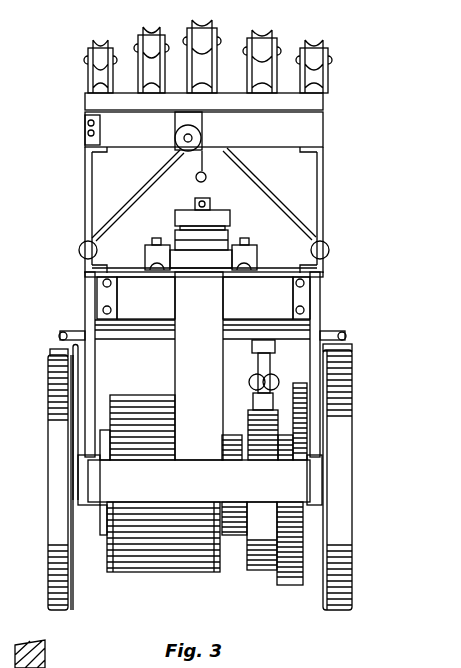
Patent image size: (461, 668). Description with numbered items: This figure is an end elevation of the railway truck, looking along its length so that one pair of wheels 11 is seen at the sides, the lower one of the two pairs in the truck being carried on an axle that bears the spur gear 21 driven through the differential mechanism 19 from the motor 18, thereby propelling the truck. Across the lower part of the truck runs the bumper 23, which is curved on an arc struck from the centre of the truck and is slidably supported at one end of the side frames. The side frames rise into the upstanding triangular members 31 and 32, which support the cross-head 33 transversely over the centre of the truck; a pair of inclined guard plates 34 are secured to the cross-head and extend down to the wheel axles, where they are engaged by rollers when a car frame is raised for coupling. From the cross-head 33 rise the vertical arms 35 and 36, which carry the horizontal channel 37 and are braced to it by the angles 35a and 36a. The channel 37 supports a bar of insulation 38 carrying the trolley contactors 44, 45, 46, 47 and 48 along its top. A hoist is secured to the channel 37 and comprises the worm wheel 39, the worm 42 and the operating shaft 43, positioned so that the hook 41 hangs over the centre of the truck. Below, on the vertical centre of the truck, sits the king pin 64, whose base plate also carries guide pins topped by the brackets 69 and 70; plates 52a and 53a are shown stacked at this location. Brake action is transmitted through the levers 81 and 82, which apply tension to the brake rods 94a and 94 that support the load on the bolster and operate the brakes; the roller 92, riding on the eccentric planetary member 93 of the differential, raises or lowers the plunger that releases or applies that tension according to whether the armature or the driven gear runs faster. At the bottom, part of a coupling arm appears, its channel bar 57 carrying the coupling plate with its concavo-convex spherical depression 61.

The pair of wheels 11 is at (57, 607).
The motor 18 is at (146, 557).
The differential mechanism 19 is at (245, 566).
The spur gear 21 is at (291, 575).
The bumper 23 is at (199, 481).
The upstanding triangular member 31 is at (85, 285).
The upstanding triangular member 32 is at (320, 286).
The cross-head 33 is at (136, 298).
The inclined guard plate 34 is at (199, 366).
The vertical arm 35 is at (85, 201).
The angle 35a is at (143, 207).
The vertical arm 36 is at (323, 205).
The angle 36a is at (268, 172).
The horizontal channel 37 is at (204, 130).
The bar of insulation 38 is at (313, 103).
The worm wheel 39 is at (203, 138).
The hook 41 is at (207, 177).
The worm 42 is at (176, 126).
The operating shaft 43 is at (85, 122).
The trolley contactor 44 is at (209, 33).
The trolley contactor 45 is at (153, 45).
The trolley contactor 46 is at (272, 40).
The trolley contactor 47 is at (96, 44).
The trolley contactor 48 is at (322, 44).
The upper plate 52a is at (177, 230).
The lower plate 53a is at (230, 241).
The channel bar 57 is at (46, 656).
The concavo-convex portion 61 is at (36, 645).
The king pin 64 is at (195, 207).
The bracket 69 is at (145, 250).
The bracket 70 is at (257, 250).
The lever 81 is at (67, 330).
The lever 82 is at (328, 333).
The roller 92 is at (270, 380).
The planetary member 93 is at (255, 392).
The brake rod 94 is at (352, 350).
The brake rod 94a is at (50, 353).